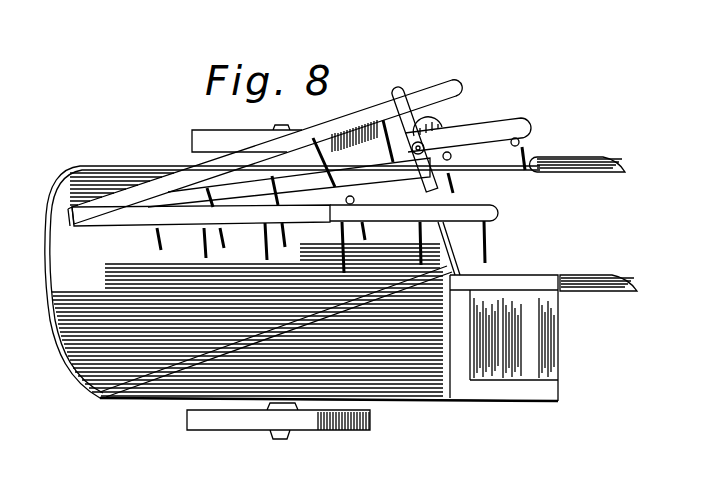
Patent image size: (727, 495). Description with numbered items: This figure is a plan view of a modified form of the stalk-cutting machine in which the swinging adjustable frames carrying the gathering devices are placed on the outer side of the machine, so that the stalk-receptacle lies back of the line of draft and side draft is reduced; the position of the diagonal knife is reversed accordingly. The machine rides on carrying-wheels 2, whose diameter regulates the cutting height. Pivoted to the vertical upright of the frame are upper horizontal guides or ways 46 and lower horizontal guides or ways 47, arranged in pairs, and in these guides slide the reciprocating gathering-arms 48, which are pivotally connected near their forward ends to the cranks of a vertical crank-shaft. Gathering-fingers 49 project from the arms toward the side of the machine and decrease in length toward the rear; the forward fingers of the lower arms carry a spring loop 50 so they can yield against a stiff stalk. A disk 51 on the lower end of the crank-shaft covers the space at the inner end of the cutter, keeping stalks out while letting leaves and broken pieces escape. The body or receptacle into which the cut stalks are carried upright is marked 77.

The carrying-wheels 2 is at (278, 281).
The upper horizontal guides or ways 46 is at (199, 215).
The lower horizontal guides or ways 47 is at (289, 182).
The gathering-arms 48 is at (286, 152).
The gathering-fingers 49 is at (286, 247).
The loop 50 is at (512, 144).
The disks 51 is at (430, 120).
The body 77 is at (341, 288).